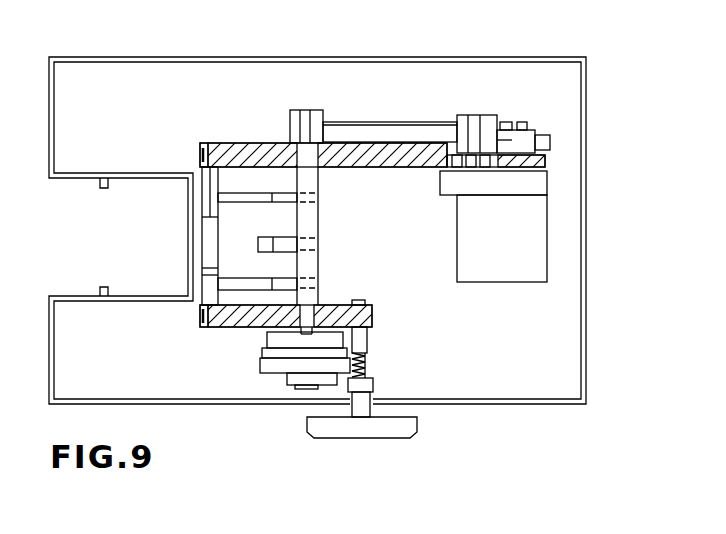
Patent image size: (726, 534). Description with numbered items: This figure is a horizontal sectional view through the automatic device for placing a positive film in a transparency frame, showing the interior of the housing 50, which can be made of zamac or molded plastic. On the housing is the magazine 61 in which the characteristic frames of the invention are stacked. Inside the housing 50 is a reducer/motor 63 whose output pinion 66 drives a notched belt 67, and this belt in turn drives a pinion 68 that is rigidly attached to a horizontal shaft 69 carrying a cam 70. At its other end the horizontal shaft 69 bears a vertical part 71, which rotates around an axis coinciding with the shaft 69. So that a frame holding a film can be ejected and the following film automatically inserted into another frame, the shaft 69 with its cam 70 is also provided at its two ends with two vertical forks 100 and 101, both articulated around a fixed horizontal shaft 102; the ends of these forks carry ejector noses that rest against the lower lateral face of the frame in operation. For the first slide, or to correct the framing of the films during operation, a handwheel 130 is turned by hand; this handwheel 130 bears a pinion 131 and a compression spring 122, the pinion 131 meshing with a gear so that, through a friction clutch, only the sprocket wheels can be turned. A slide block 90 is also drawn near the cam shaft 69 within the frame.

The housing 50 is at (591, 330).
The magazine 61 is at (130, 238).
The reducer/motor 63 is at (537, 234).
The output pinion 66 is at (482, 115).
The notched belt 67 is at (377, 122).
The pinion 68 is at (295, 110).
The shaft 69 is at (293, 147).
The cam 70 is at (318, 225).
The vertical part 71 is at (283, 338).
The slide block 90 is at (318, 245).
The vertical fork 100 is at (318, 197).
The vertical fork 101 is at (318, 283).
The fixed horizontal shaft 102 is at (200, 316).
The compression spring 122 is at (352, 375).
The handwheel 130 is at (398, 430).
The pinion 131 is at (372, 382).